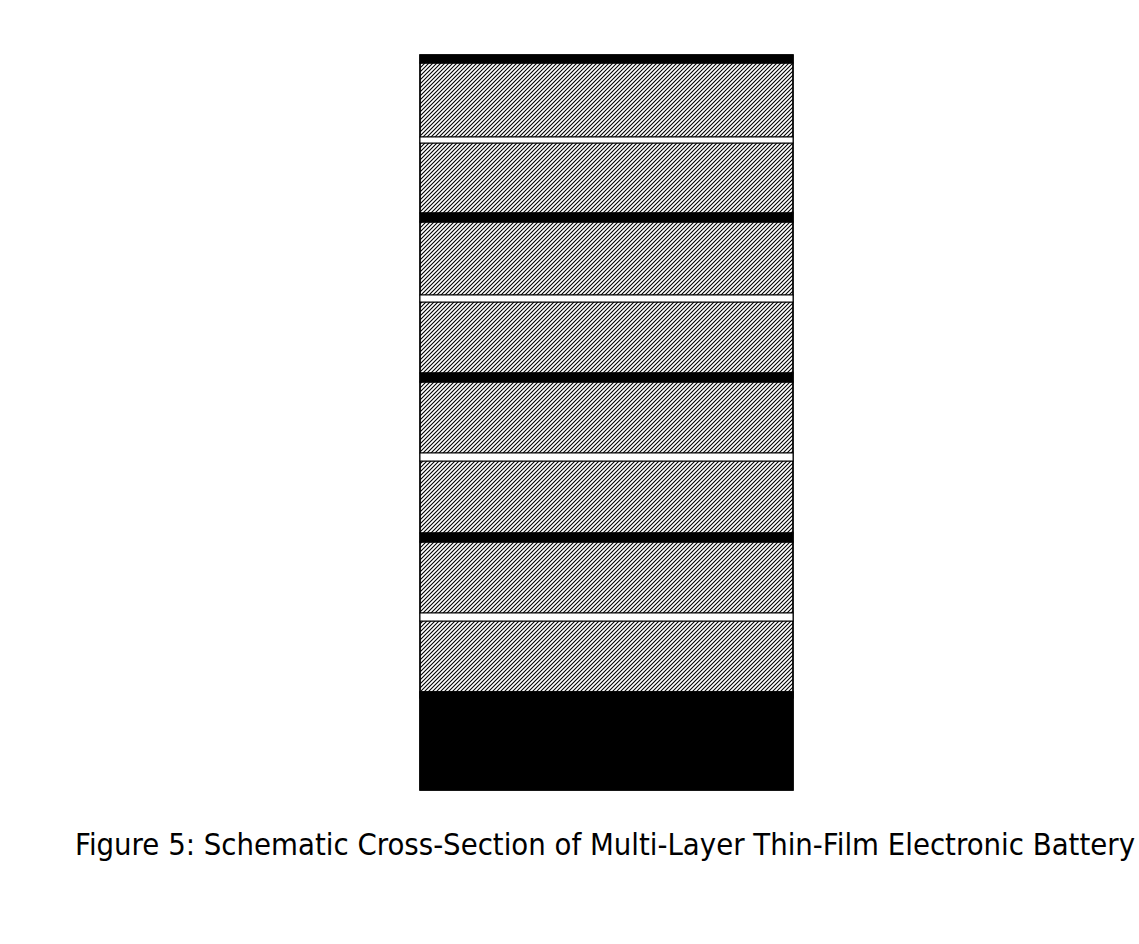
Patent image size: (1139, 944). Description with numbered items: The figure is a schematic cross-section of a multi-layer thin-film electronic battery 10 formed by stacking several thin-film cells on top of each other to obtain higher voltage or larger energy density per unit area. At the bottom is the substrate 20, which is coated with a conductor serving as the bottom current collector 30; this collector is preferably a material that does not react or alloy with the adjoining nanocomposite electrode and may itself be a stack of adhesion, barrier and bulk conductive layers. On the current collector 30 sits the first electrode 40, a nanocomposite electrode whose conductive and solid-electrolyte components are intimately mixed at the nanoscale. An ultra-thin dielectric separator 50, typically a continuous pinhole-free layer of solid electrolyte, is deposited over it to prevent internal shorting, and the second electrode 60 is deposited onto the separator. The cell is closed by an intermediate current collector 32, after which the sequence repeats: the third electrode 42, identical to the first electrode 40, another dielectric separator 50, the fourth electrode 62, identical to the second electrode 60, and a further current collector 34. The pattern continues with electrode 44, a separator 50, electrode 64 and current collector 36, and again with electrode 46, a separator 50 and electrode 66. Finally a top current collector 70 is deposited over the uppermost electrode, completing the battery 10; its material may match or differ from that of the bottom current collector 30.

The thin-film electronic battery 10 is at (368, 144).
The substrate 20 is at (606, 741).
The current collector 30 is at (800, 697).
The current collector 32 is at (420, 542).
The current collector 34 is at (420, 377).
The current collector 36 is at (420, 217).
The electrode 1 40 is at (606, 656).
The electrode 3 42 is at (606, 497).
The electrode 44 is at (606, 337).
The electrode 46 is at (606, 178).
The dielectric separator 50 is at (800, 615).
The electrode 2 60 is at (606, 577).
The electrode 4 62 is at (606, 417).
The electrode 64 is at (606, 258).
The electrode 66 is at (606, 100).
The current collector 70 is at (798, 61).